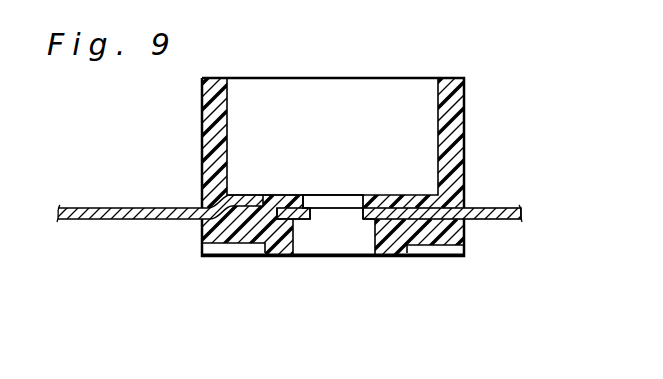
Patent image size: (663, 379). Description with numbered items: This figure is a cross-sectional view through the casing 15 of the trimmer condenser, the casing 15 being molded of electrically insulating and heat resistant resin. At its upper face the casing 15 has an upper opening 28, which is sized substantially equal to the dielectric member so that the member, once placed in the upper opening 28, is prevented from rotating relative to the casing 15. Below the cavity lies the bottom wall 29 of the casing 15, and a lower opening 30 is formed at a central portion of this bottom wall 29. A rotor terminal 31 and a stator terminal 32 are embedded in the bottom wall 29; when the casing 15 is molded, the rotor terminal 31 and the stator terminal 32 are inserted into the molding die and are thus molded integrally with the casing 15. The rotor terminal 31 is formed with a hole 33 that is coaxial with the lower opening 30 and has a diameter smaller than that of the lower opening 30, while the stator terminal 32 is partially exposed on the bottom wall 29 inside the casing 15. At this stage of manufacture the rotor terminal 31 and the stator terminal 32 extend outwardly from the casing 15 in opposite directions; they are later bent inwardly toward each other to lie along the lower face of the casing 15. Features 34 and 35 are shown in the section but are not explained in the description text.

The casing 15 is at (424, 53).
The upper opening 28 is at (258, 78).
The bottom wall 29 is at (280, 240).
The lower opening 30 is at (355, 242).
The rotor terminal 31 is at (490, 208).
The stator terminal 32 is at (117, 216).
The hole 33 is at (322, 223).
The recess 34 is at (432, 250).
The recess 35 is at (222, 250).